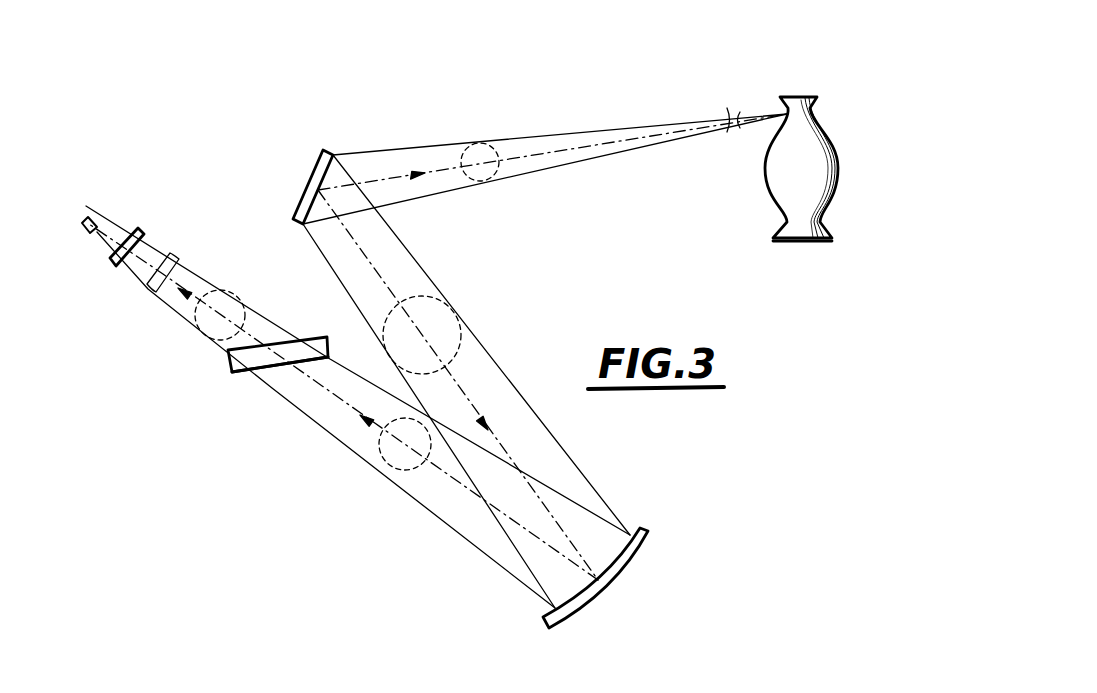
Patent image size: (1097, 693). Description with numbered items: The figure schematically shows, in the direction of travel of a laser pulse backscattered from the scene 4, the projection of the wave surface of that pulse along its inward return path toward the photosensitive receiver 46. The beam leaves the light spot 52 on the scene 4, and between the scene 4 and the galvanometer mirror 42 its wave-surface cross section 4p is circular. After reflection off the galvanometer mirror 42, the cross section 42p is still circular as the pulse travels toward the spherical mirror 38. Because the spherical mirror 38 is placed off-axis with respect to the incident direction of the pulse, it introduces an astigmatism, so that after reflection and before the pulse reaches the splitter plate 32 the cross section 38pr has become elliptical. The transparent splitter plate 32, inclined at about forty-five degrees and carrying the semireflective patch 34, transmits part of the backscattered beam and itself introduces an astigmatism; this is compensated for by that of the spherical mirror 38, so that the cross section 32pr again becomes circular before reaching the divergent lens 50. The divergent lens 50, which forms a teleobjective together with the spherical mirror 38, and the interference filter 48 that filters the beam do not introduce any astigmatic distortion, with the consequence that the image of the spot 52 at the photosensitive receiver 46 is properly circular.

The scene 4 is at (833, 90).
The cross section of wave surface 4p is at (470, 143).
The light spot 52 is at (786, 113).
The galvanometer mirror 42 is at (320, 159).
The cross section of wave surface 42p is at (447, 327).
The spherical mirror 38 is at (627, 564).
The cross section of wave surface 38pr is at (385, 458).
The splitter plate 32 is at (325, 337).
The semireflective patch 34 is at (272, 372).
The cross section of wave surface 32pr is at (213, 330).
The photosensitive receiver 46 is at (78, 223).
The interference filter 48 is at (117, 261).
The divergent lens 50 is at (150, 290).